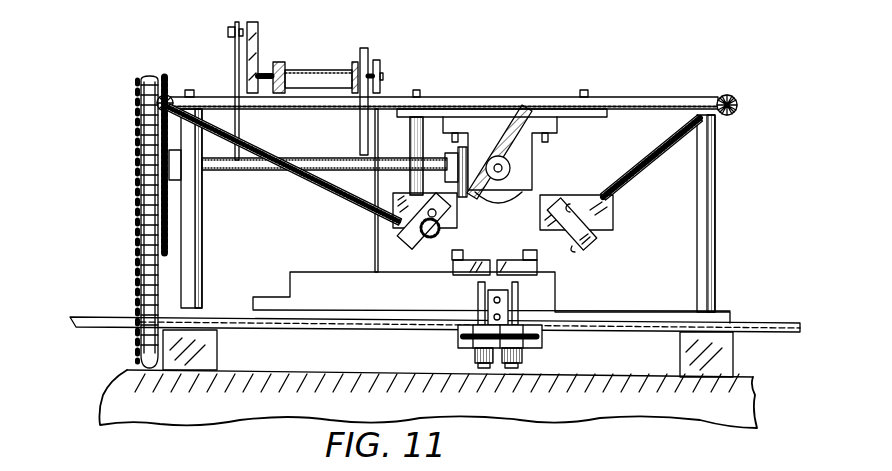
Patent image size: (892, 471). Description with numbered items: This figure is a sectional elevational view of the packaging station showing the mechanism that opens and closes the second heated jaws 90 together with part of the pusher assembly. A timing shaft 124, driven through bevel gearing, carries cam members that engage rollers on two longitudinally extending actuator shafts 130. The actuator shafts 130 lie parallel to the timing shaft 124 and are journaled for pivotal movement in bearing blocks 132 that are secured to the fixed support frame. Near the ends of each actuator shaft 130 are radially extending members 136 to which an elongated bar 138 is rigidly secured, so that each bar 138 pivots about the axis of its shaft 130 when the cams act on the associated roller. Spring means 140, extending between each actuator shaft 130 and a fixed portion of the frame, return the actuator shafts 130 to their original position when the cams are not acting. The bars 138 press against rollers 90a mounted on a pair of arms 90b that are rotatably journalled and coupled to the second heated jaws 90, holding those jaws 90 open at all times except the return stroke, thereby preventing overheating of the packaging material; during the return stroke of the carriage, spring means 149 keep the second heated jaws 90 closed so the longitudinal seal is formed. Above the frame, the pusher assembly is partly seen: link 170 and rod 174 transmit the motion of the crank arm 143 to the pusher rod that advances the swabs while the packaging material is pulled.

The rod 174 is at (234, 45).
The link 170 is at (259, 45).
The crank arm 143 is at (382, 78).
The timing shaft 124 is at (511, 167).
The spring means 140 is at (298, 196).
The bearing block 132 is at (405, 200).
The actuator shaft 130 is at (612, 206).
The radially extending member 136 is at (598, 233).
The elongated bar 138 is at (580, 249).
The roller 90a is at (532, 250).
The arm 90b is at (460, 266).
The spring means 149 is at (460, 347).
The second heated jaws 90 is at (522, 356).